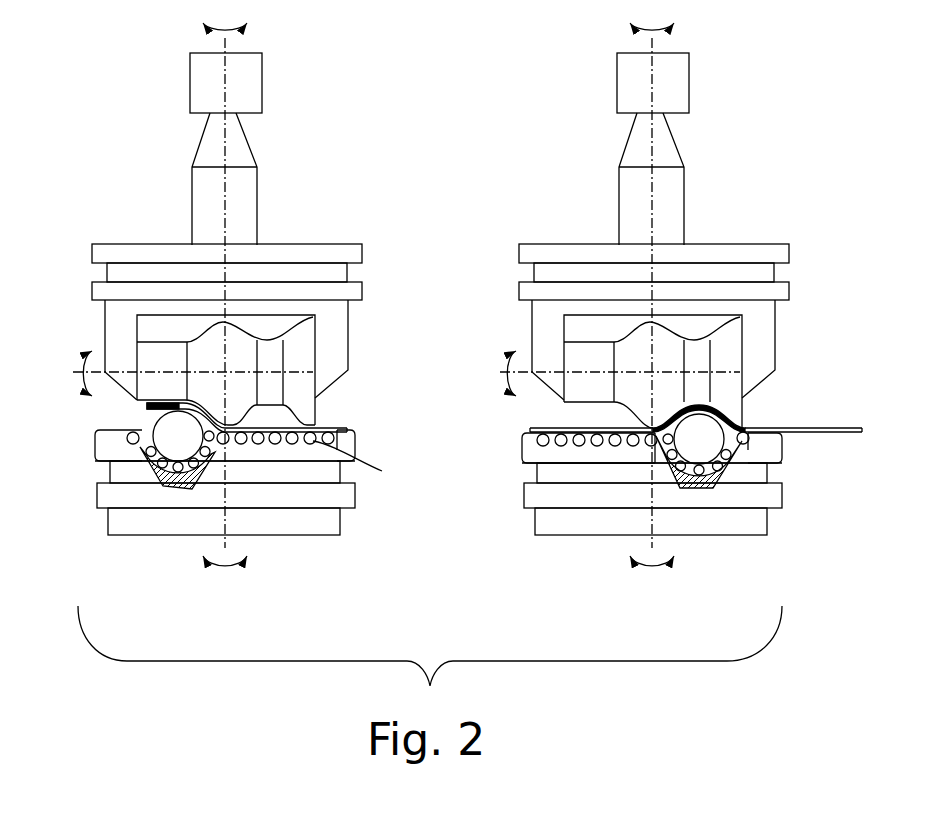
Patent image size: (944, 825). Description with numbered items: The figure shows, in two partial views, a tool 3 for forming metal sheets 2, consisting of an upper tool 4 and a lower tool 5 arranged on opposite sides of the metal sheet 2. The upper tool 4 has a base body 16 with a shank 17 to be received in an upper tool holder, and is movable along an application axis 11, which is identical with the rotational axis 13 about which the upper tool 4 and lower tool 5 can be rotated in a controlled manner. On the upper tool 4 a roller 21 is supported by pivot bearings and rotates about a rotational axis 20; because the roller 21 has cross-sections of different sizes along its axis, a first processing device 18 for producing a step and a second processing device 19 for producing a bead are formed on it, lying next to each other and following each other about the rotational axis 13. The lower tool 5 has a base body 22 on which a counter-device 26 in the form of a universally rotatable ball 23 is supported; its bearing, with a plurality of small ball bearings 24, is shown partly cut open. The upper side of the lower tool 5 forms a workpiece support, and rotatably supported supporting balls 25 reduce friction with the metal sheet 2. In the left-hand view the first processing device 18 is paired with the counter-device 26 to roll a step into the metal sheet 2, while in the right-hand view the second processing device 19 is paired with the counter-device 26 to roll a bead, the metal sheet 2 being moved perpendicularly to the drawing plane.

The metal sheet 2 is at (342, 428).
The tool 3 is at (322, 121).
The upper tool 4 is at (128, 236).
The lower tool 5 is at (92, 498).
The application axis 11 is at (387, 292).
The rotational axis of the tool 13 is at (222, 42).
The base body 16 is at (310, 233).
The shank 17 is at (205, 83).
The first processing device 18 is at (188, 316).
The second processing device 19 is at (268, 336).
The rotational axis 20 is at (98, 352).
The roller 21 is at (324, 415).
The base body 22 is at (340, 498).
The ball 23 is at (176, 436).
The small ball bearings 24 is at (132, 458).
The supporting balls 25 is at (322, 449).
The counter-device 26 is at (148, 406).